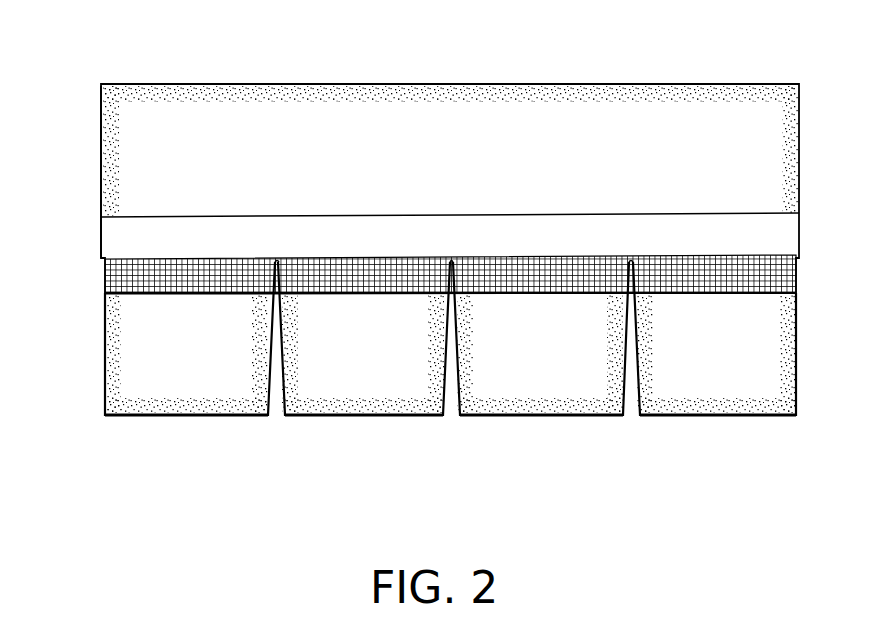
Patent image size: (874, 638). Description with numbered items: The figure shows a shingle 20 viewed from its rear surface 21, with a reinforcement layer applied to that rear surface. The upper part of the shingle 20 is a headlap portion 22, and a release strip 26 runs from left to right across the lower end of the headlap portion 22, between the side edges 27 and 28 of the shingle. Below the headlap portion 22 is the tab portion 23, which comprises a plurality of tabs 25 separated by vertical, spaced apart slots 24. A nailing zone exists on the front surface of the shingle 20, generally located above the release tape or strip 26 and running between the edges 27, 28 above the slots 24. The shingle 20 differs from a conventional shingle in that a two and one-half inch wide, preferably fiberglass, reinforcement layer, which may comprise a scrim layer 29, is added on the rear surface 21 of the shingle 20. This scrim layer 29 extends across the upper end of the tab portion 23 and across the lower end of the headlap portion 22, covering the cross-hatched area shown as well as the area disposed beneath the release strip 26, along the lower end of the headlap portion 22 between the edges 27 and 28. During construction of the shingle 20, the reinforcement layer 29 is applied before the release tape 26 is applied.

The shingle 20 is at (378, 129).
The rear surface 21 is at (565, 125).
The headlap portion 22 is at (200, 137).
The tab portion 23 is at (149, 371).
The slots 24 is at (452, 400).
The tabs 25 is at (241, 388).
The release strip 26 is at (253, 235).
The edge 27 is at (101, 181).
The edge 28 is at (800, 142).
The scrim layer 29 is at (103, 278).